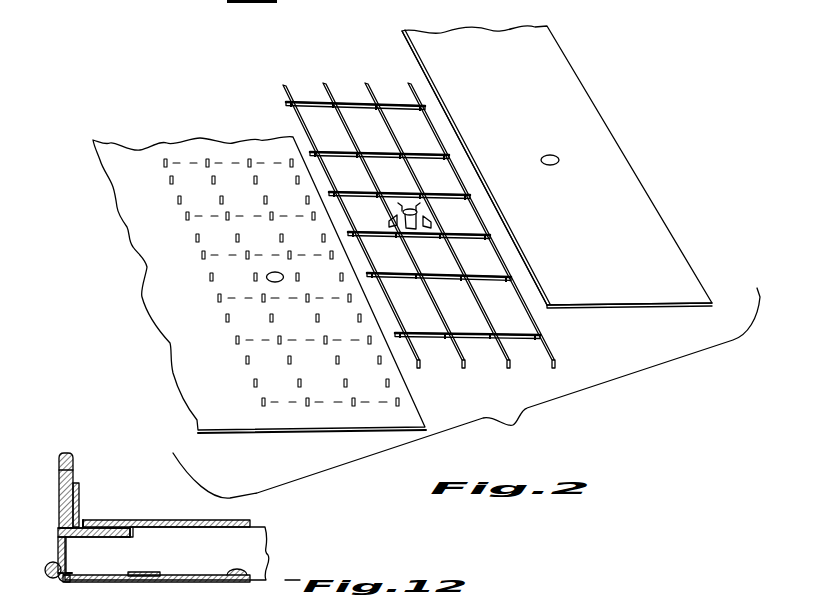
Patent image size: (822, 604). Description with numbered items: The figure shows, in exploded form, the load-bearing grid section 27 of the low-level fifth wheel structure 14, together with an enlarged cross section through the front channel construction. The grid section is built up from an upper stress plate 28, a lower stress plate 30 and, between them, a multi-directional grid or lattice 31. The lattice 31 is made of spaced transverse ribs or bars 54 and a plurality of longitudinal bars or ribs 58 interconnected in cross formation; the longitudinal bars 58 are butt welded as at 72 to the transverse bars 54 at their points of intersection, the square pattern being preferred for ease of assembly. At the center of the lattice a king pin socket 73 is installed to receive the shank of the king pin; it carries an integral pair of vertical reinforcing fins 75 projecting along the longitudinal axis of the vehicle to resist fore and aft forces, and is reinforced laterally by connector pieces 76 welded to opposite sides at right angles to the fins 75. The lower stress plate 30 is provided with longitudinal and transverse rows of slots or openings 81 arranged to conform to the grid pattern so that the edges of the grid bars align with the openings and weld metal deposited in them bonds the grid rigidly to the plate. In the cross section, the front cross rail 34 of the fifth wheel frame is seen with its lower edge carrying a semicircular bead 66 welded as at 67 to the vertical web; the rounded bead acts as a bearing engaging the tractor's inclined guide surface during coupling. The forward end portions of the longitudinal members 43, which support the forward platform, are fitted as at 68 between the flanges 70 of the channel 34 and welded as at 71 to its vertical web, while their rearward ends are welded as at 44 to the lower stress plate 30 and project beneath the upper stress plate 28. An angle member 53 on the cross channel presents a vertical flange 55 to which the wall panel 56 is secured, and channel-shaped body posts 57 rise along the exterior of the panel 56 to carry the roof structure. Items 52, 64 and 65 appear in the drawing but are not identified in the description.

In FIG. 2, the low-level fifth wheel structure 14 is at (557, 167).
In FIG. 2, the load-bearing grid section 27 is at (555, 80).
In FIG. 2, the upper stress plate 28 is at (617, 185).
In FIG. 12, the upper stress plate 28 is at (213, 520).
In FIG. 2, the lower stress plate 30 is at (259, 285).
In FIG. 12, the lower stress plate 30 is at (180, 585).
In FIG. 2, the grid or lattice 31 is at (420, 235).
In FIG. 2, the transverse ribs or bars 54 is at (365, 97).
In FIG. 2, the longitudinal bars or ribs 58 is at (393, 103).
In FIG. 2, the butt welds 72 is at (373, 113).
In FIG. 2, the king pin socket 73 is at (413, 206).
In FIG. 2, the vertical reinforcing fins 75 is at (395, 221).
In FIG. 2, the connector pieces 76 is at (398, 203).
In FIG. 2, the slots or openings 81 is at (207, 217).
In FIG. 12, the front cross rail 34 is at (60, 543).
In FIG. 12, the longitudinal members 43 is at (270, 543).
In FIG. 12, the weld 44 is at (248, 580).
In FIG. 12, the plate edge 52 is at (97, 520).
In FIG. 12, the angle member 53 is at (84, 501).
In FIG. 12, the vertical flange 55 is at (78, 497).
In FIG. 12, the wall panel 56 is at (72, 528).
In FIG. 12, the body posts 57 is at (58, 463).
In FIG. 12, the lower corner 64 is at (80, 583).
In FIG. 12, the raised rib 65 is at (100, 577).
In FIG. 12, the semicircular bead 66 is at (47, 573).
In FIG. 12, the weld 67 is at (67, 568).
In FIG. 12, the fitted end portions 68 is at (127, 538).
In FIG. 12, the flanges 70 is at (123, 528).
In FIG. 12, the weld 71 is at (67, 550).